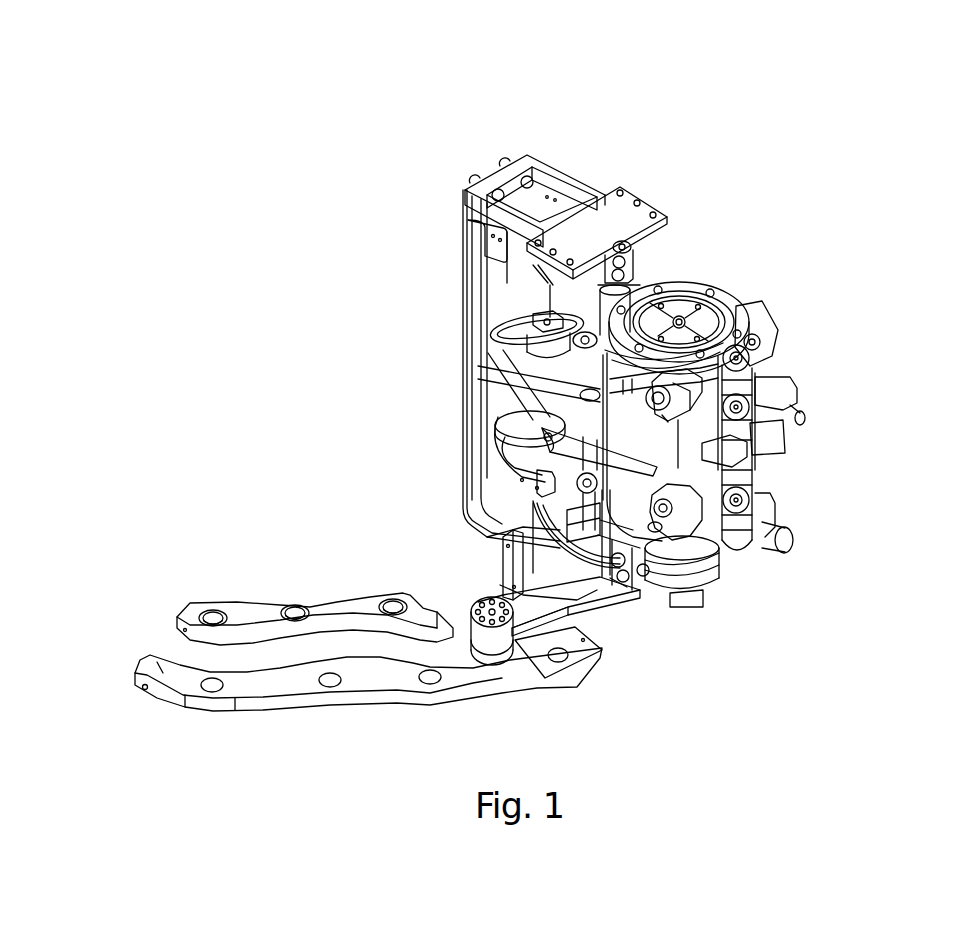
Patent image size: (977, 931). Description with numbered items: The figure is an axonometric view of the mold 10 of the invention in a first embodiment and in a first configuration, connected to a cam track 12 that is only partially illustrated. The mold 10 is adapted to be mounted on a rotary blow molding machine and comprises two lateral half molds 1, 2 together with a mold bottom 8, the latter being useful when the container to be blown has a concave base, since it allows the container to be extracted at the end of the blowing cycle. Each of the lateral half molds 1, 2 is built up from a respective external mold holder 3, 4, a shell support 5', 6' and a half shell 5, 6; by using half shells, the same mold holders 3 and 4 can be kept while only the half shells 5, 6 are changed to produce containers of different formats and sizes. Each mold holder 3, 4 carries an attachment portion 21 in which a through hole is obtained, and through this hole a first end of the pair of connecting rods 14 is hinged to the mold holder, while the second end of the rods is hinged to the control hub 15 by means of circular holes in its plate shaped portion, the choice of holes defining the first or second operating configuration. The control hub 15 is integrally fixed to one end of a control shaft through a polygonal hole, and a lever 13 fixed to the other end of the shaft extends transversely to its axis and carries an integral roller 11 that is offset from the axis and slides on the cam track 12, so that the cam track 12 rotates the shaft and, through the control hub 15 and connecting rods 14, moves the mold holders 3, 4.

The mold 10 is at (480, 120).
The lateral half mold 1 is at (704, 382).
The lateral half mold 2 is at (753, 312).
The external mold holder 3 is at (658, 443).
The external mold holder 4 is at (750, 350).
The half shell 5 is at (694, 238).
The shell support 5' is at (679, 216).
The half shell 6 is at (717, 249).
The shell support 6' is at (753, 271).
The mold bottom 8 is at (725, 568).
The roller 11 is at (497, 655).
The cam track 12 is at (362, 625).
The lever 13 is at (535, 620).
The first pair of connecting rods 14 is at (507, 382).
The control hub 15 is at (488, 337).
The attachment portion 21 is at (587, 428).